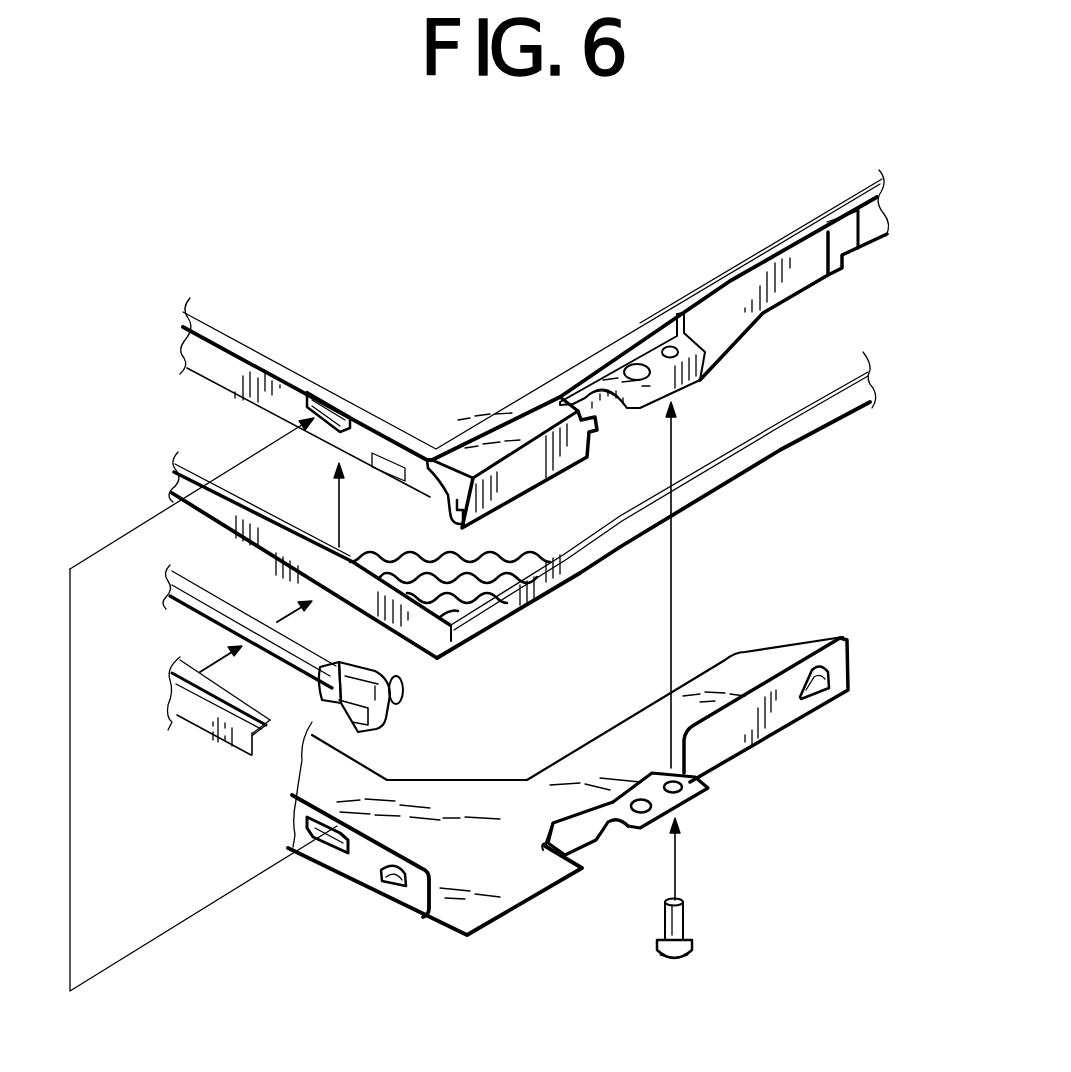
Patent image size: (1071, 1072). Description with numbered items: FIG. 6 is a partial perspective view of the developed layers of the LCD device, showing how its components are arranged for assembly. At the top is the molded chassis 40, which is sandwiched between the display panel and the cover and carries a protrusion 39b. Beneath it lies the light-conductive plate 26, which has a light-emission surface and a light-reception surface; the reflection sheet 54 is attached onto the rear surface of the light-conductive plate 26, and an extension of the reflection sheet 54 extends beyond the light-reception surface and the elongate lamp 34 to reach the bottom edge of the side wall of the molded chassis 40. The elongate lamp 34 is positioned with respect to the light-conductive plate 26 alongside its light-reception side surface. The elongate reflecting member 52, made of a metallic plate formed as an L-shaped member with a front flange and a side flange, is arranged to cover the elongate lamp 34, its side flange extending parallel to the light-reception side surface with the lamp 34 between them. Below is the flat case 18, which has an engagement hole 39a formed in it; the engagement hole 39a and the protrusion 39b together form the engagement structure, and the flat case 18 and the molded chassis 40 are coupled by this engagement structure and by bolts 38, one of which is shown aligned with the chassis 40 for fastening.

The flat case 18 is at (753, 742).
The light-conductive plate 26 is at (544, 598).
The elongate lamp 34 is at (197, 617).
The bolt 38 is at (687, 920).
The engagement hole 39a is at (330, 853).
The protrusion 39b is at (312, 423).
The molded chassis 40 is at (792, 285).
The elongate reflecting member 52 is at (200, 733).
The reflection sheet 54 is at (445, 660).